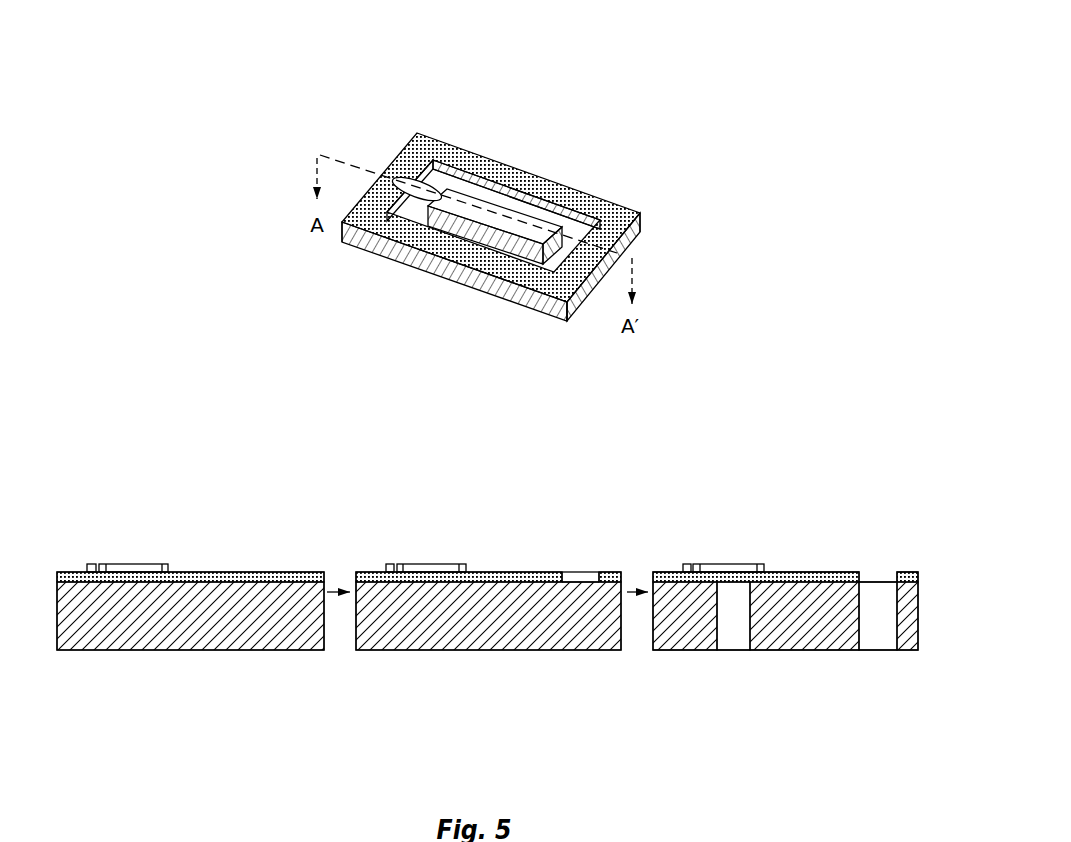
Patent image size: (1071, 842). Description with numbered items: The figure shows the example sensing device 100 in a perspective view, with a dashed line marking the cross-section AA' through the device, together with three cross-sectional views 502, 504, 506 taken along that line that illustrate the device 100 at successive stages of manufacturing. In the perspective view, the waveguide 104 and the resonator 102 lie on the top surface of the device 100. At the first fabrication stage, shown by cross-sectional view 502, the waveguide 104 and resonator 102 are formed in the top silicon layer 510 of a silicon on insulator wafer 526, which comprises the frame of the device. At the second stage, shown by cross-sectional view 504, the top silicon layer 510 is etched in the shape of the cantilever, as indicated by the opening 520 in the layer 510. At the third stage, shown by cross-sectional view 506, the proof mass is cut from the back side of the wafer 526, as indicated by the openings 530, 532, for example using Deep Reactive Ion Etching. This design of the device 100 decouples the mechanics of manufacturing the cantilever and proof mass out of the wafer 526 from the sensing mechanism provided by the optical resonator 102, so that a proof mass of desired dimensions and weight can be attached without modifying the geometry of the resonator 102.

The sensing device 100 is at (566, 96).
The resonator 102 is at (422, 184).
The waveguide 104 is at (404, 181).
The cross-sectional view 502 is at (227, 412).
The cross-sectional view 504 is at (503, 420).
The cross-sectional view 506 is at (752, 418).
The top silicon layer 510 is at (237, 573).
The opening 520 is at (588, 581).
The silicon on insulator wafer 526 is at (167, 651).
The opening 530 is at (728, 650).
The opening 532 is at (882, 650).